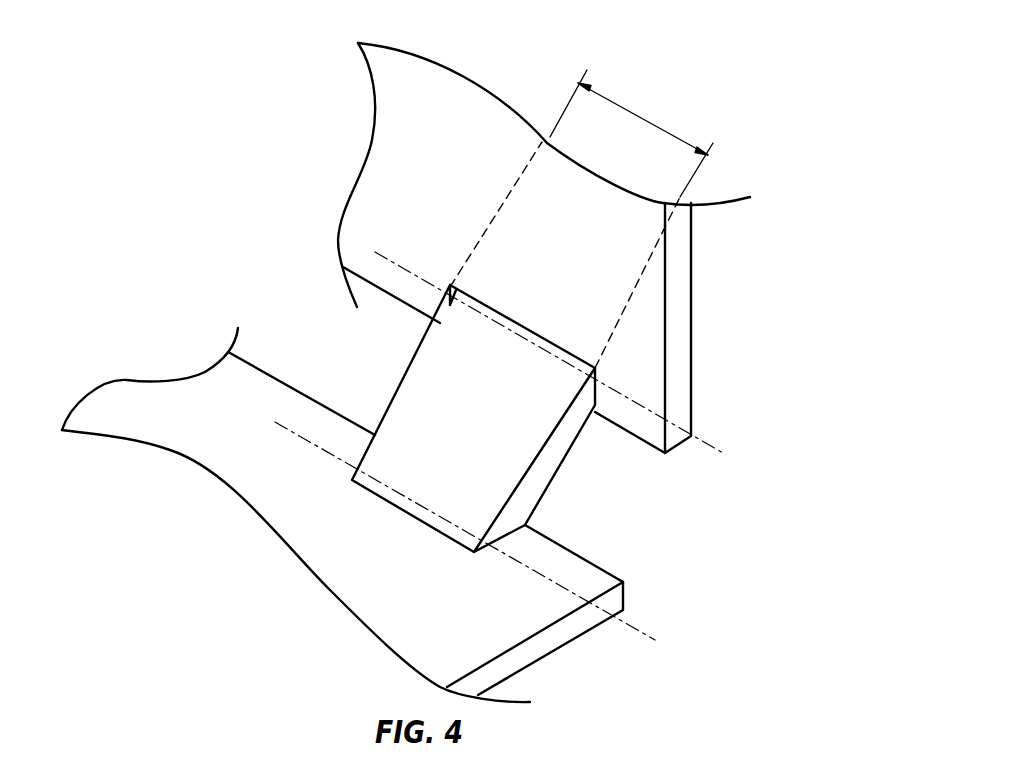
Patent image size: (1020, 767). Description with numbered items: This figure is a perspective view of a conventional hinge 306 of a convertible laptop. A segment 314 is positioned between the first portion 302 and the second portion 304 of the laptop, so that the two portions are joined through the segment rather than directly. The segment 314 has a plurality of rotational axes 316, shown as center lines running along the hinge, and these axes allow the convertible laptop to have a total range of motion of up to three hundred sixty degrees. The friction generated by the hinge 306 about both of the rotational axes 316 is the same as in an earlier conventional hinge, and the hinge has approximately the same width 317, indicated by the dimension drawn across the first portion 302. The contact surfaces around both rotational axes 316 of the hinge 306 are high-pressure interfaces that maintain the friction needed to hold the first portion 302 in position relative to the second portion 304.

The first portion 302 is at (692, 322).
The second portion 304 is at (540, 648).
The segment 314 is at (551, 455).
The rotational axes 316 is at (714, 453).
The width 317 is at (581, 219).
The hinge 306 is at (667, 502).